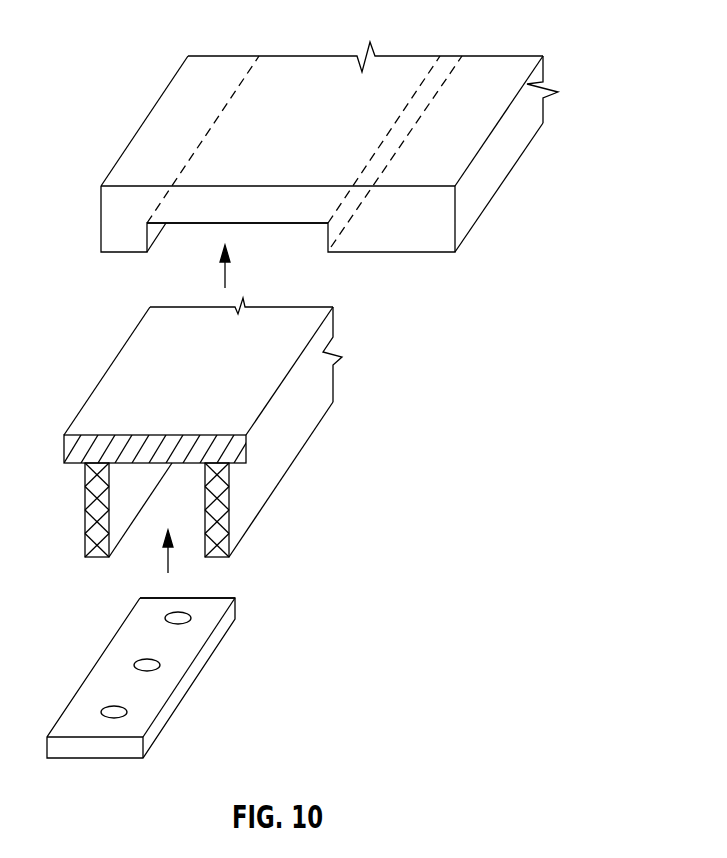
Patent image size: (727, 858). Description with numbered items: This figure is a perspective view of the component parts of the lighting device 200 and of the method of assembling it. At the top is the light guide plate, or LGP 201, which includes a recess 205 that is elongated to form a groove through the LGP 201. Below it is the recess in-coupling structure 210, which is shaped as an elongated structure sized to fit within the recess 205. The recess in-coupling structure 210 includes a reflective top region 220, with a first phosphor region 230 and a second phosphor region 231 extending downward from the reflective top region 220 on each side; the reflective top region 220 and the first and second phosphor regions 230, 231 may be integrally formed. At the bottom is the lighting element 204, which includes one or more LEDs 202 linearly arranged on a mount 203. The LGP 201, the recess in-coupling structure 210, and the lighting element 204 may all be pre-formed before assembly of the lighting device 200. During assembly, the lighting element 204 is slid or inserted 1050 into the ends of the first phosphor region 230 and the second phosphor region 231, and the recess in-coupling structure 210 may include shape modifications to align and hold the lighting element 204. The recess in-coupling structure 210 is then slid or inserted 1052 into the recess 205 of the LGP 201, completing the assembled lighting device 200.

The lighting device 200 is at (108, 21).
The light guide plate (LGP) 201 is at (172, 117).
The recess 205 is at (242, 225).
The sliding or inserting of the recess in-coupling structure 1052 is at (227, 267).
The recess in-coupling structure 210 is at (210, 427).
The reflective top region 220 is at (262, 373).
The first phosphor region 230 is at (220, 498).
The second phosphor region 231 is at (93, 530).
The sliding or inserting of the lighting element 1050 is at (169, 560).
The LEDs 202 is at (146, 665).
The mount 203 is at (182, 680).
The lighting element 204 is at (237, 607).